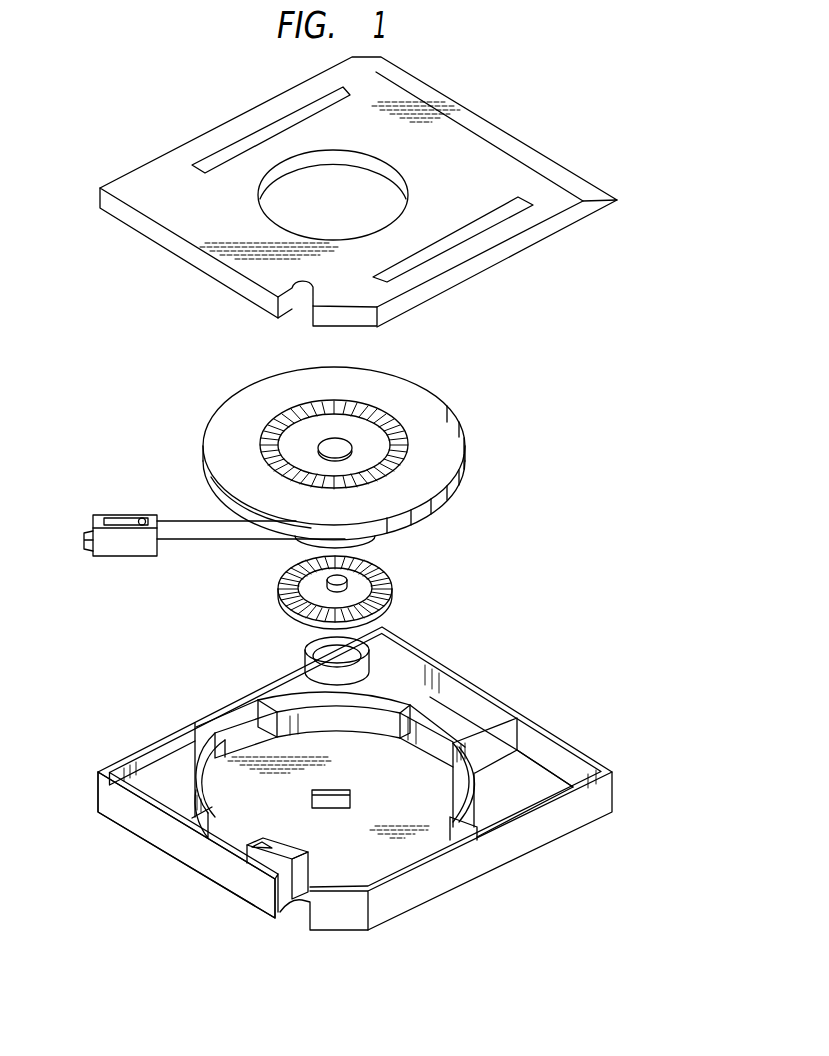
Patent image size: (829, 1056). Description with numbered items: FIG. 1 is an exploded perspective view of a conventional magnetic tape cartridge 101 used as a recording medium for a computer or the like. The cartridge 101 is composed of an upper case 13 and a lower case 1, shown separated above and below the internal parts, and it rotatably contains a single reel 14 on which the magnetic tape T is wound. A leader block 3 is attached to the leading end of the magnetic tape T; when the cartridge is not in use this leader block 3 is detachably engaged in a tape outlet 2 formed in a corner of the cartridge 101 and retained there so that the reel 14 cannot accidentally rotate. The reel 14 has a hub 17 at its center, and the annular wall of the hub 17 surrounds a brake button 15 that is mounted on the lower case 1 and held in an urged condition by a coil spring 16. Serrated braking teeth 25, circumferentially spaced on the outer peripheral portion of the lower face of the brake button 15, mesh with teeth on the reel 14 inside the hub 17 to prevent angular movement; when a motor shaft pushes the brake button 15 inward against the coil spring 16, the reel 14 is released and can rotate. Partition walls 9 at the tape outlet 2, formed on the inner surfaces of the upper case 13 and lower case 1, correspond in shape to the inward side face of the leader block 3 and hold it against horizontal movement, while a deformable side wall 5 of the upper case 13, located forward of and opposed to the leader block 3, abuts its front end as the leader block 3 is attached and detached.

The lower case 1 is at (473, 157).
The cartridge 101 is at (630, 276).
The reel 14 is at (422, 420).
The hub 17 is at (372, 542).
The magnetic tape T is at (195, 530).
The leader block 3 is at (119, 520).
The brake button 15 is at (310, 590).
The braking teeth 25 is at (380, 613).
The coil spring 16 is at (305, 651).
The tape outlet 2 is at (332, 931).
The upper case 13 is at (530, 748).
The side wall 5 is at (258, 891).
The partition walls 9 is at (296, 882).